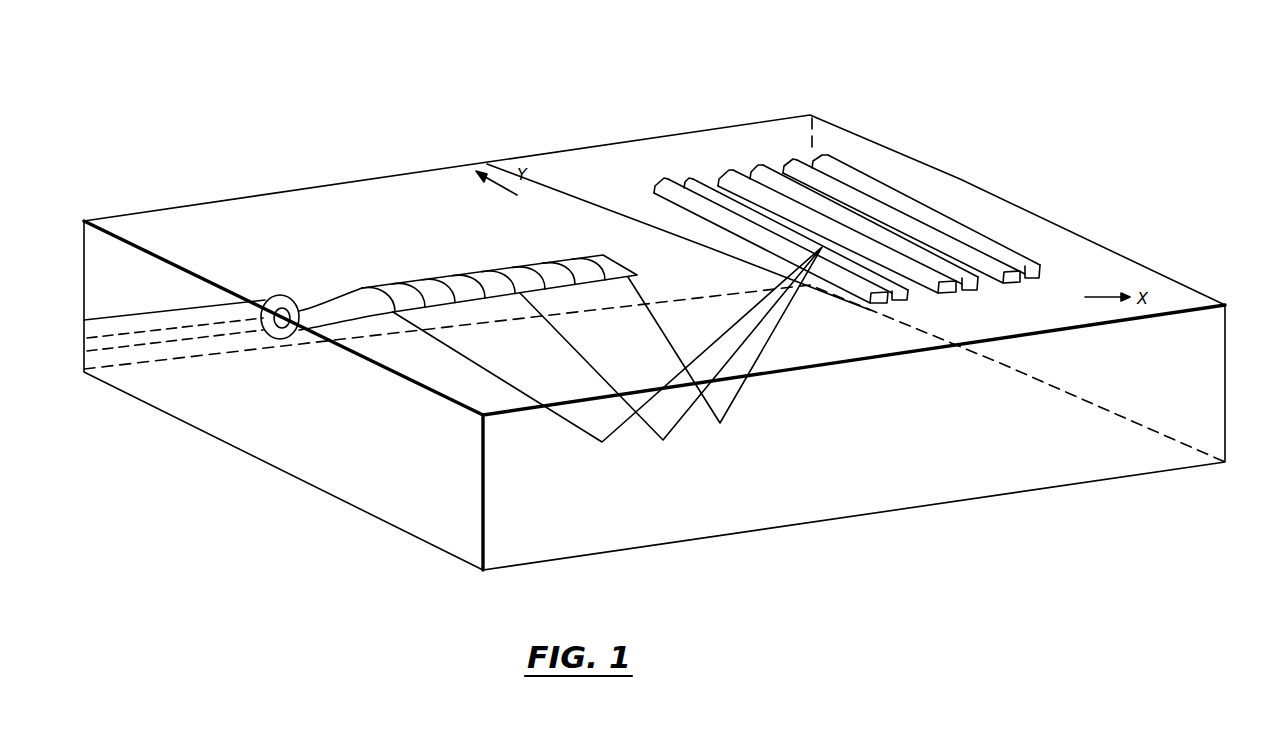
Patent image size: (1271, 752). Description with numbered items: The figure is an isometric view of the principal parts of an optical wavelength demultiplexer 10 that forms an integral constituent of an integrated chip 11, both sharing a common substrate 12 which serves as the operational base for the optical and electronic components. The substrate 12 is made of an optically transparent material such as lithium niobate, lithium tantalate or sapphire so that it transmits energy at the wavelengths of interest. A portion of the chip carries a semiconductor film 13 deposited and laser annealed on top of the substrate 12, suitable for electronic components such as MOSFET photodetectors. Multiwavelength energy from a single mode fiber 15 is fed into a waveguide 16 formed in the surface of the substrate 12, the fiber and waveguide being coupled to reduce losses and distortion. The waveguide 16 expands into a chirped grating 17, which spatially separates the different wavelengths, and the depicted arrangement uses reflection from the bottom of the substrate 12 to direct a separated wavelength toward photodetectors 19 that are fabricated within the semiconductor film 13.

The optical wavelength demultiplexer 10 is at (564, 94).
The integrated chip 11 is at (1045, 184).
The substrate 12 is at (1127, 461).
The semiconductor film 13 is at (872, 309).
The single mode fiber 15 is at (113, 318).
The waveguide 16 is at (352, 300).
The chirped grating 17 is at (582, 258).
The photodetectors 19 is at (795, 158).